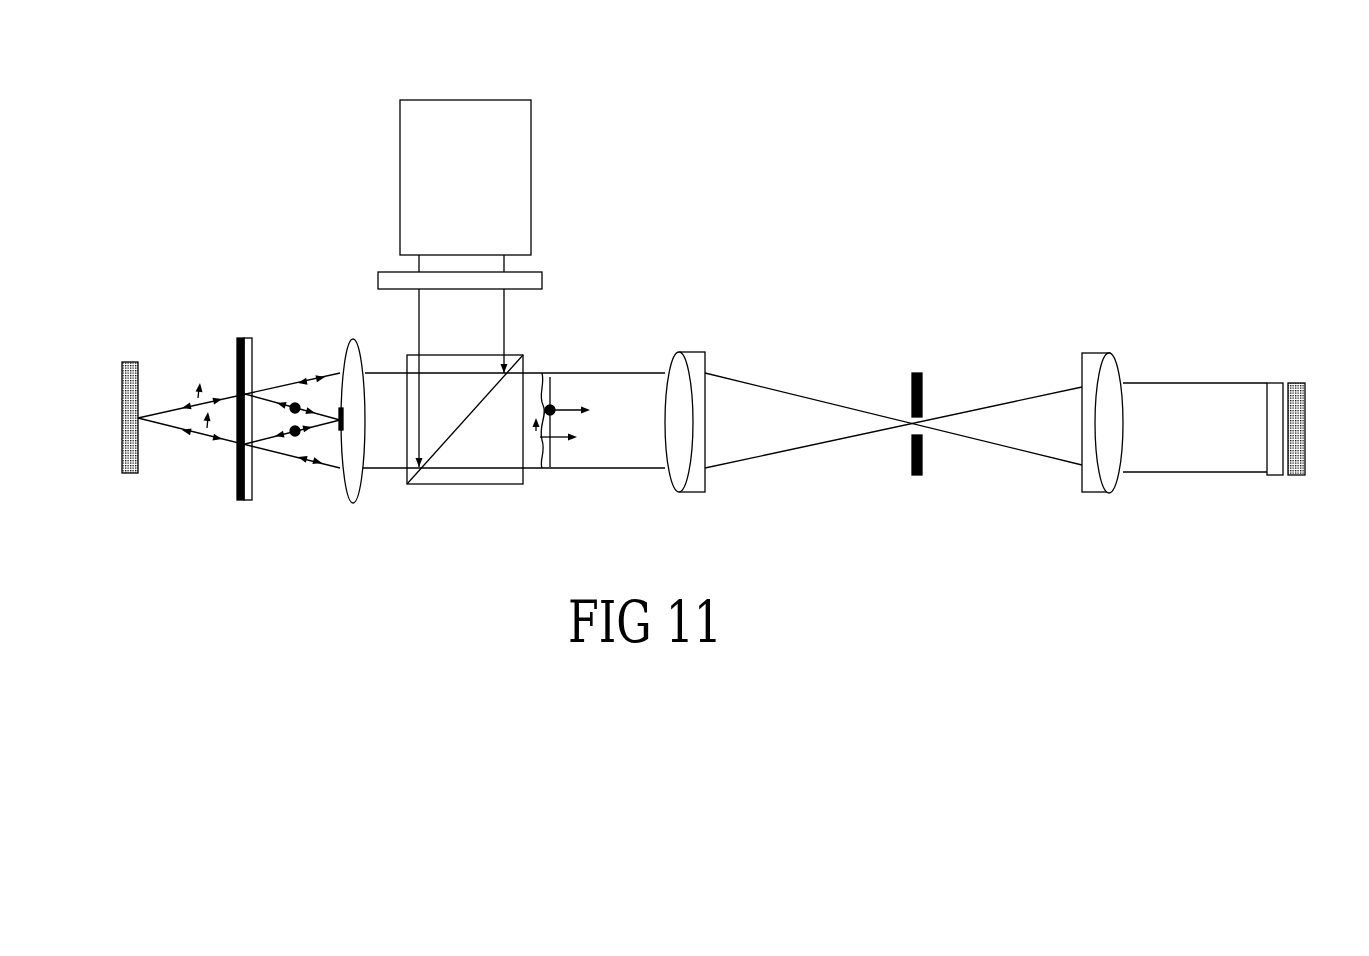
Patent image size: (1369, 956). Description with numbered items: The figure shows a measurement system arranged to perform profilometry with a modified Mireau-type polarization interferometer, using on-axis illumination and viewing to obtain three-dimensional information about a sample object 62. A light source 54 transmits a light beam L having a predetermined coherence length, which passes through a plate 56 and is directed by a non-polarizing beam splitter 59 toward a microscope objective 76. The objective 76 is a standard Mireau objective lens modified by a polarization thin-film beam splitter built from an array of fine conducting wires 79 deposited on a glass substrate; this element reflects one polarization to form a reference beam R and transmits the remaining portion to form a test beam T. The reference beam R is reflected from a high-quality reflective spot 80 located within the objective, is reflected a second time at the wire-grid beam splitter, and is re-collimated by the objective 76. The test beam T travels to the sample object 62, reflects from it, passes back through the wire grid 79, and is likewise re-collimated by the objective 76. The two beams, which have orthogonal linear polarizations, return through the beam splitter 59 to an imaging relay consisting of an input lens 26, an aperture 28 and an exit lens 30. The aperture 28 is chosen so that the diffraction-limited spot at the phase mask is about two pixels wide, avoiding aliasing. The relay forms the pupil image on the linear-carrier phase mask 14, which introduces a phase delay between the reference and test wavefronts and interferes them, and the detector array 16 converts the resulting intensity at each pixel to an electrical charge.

The light source 54 is at (494, 186).
The filter plate 56 is at (431, 258).
The light beam L is at (496, 361).
The non-polarizing beam splitter 59 is at (465, 453).
The microscope objective 76 is at (332, 394).
The reflective spot 80 is at (310, 478).
The reference beam R is at (410, 384).
The test beam T is at (354, 405).
The sample object 62 is at (93, 447).
The fine conducting wires 79 is at (209, 447).
The input lens 26 is at (705, 452).
The aperture 28 is at (944, 459).
The exit lens 30 is at (1121, 458).
The linear-carrier phase mask 14 is at (1243, 465).
The detector array 16 is at (1322, 456).